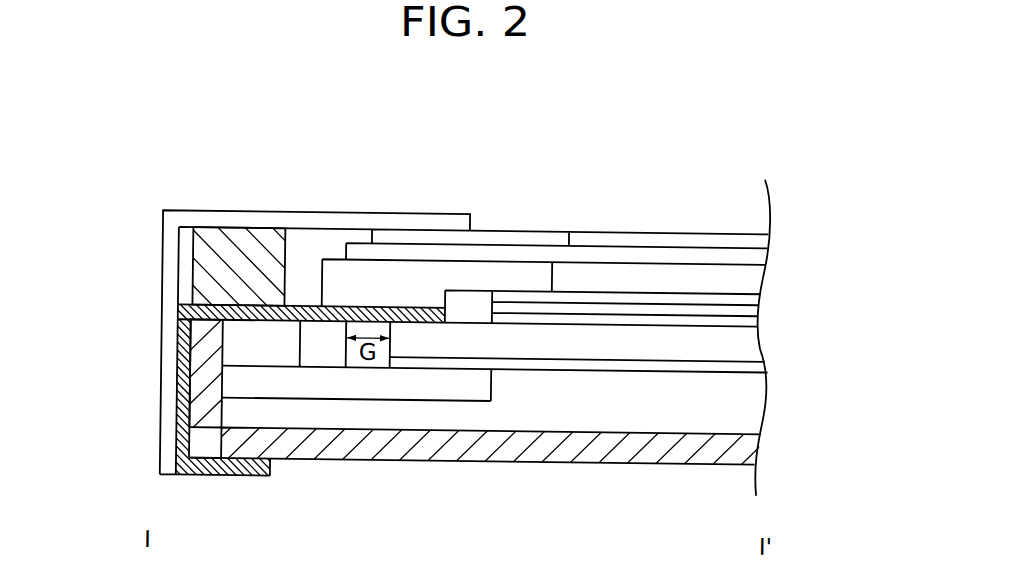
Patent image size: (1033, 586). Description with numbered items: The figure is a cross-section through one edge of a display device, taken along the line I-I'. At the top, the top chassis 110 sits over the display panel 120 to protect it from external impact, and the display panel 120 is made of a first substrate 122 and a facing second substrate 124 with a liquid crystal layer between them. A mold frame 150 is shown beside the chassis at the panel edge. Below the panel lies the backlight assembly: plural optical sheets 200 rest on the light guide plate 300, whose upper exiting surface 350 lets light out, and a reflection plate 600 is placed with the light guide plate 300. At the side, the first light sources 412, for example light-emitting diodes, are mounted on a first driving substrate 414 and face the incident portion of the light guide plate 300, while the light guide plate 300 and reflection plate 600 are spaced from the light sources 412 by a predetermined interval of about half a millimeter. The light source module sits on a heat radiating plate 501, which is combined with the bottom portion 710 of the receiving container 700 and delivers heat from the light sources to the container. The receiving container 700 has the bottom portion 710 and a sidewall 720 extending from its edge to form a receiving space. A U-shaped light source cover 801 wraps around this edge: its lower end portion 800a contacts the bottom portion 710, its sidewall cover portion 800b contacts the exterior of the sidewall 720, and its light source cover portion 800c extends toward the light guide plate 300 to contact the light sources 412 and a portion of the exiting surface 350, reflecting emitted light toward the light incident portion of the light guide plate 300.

The top chassis 110 is at (203, 225).
The mold frame 150 is at (264, 239).
The display panel 120 is at (553, 141).
The first substrate 122 is at (571, 255).
The second substrate 124 is at (626, 240).
The optical sheets 200 is at (769, 289).
The light guide plate 300 is at (760, 328).
The reflection plate 600 is at (768, 364).
The light source cover portion 800c is at (215, 309).
The sidewall cover portion 800b is at (185, 381).
The lower end portion 800a is at (212, 480).
The light source cover 801 is at (80, 513).
The sidewall 720 is at (208, 378).
The first light sources 412 is at (320, 357).
The first driving substrate 414 is at (376, 390).
The exiting surface 350 is at (418, 324).
The heat radiating plate 501 is at (633, 411).
The bottom portion 710 is at (524, 447).
The receiving container 700 is at (697, 470).